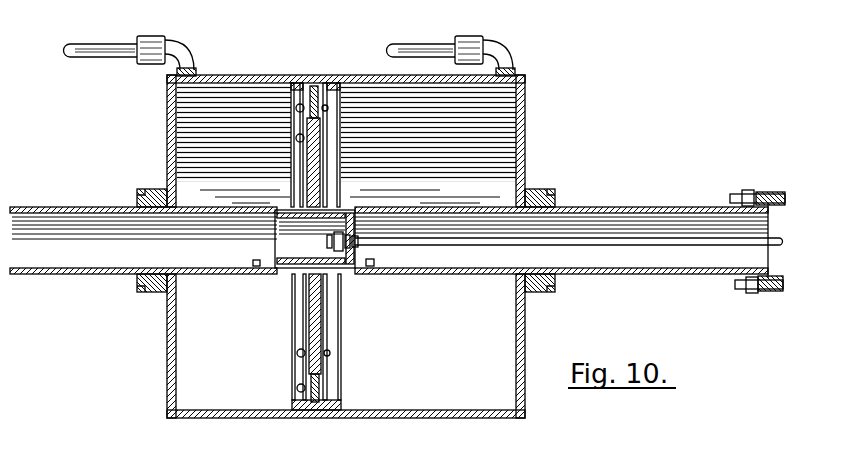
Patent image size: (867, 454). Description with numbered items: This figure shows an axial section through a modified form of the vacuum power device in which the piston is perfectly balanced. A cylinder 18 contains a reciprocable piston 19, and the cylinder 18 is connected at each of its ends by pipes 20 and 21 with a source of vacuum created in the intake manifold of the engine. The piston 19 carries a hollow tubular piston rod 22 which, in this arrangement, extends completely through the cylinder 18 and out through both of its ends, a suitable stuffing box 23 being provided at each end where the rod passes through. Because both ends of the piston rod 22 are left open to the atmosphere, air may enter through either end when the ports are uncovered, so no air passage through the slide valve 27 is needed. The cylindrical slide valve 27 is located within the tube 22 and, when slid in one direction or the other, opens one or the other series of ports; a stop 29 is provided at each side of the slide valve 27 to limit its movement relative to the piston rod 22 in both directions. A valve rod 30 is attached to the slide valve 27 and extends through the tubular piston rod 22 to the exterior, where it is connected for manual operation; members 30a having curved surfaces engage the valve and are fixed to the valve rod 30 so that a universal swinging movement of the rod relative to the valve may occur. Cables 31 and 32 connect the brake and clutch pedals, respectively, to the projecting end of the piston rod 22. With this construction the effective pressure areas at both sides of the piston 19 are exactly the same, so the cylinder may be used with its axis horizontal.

The cylinder 18 is at (168, 352).
The piston 19 is at (318, 380).
The pipe 20 is at (85, 48).
The pipe 21 is at (420, 48).
The tubular piston rod 22 is at (50, 207).
The stuffing box 23 is at (158, 200).
The slide valve 27 is at (290, 243).
The stop 29 is at (256, 270).
The valve rod 30 is at (592, 238).
The members with curved surfaces 30a is at (355, 239).
The cable 31 is at (778, 200).
The cable 32 is at (778, 292).